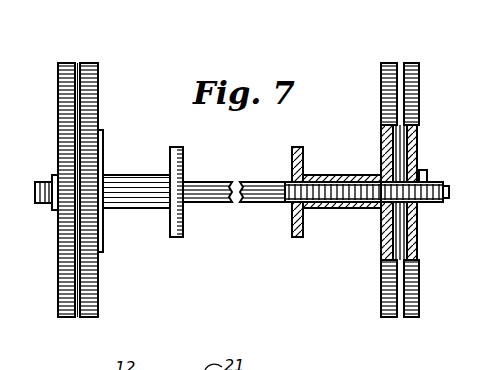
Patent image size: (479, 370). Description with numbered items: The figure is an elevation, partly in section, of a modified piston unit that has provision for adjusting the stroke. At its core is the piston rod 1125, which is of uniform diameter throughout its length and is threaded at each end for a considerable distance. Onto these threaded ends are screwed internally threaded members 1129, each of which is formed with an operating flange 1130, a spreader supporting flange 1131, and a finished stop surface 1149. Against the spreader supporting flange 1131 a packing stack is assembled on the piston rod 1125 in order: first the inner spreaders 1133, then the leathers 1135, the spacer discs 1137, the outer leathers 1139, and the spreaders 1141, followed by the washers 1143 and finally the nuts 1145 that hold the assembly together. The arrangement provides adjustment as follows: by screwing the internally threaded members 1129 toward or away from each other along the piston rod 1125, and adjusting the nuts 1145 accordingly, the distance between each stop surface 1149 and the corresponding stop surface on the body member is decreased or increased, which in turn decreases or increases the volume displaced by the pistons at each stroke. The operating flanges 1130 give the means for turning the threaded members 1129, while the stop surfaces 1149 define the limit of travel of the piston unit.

The piston rod 1125 is at (230, 204).
The internally threaded members 1129 is at (118, 210).
The operating flanges 1130 is at (183, 157).
The spreader supporting flanges 1131 is at (380, 140).
The inner spreaders 1133 is at (385, 262).
The leathers 1135 is at (98, 284).
The spacer discs 1137 is at (92, 304).
The outer leathers 1139 is at (80, 318).
The spreaders 1141 is at (410, 235).
The washers 1143 is at (417, 210).
The nuts 1145 is at (428, 172).
The finished stop surfaces 1149 is at (381, 244).